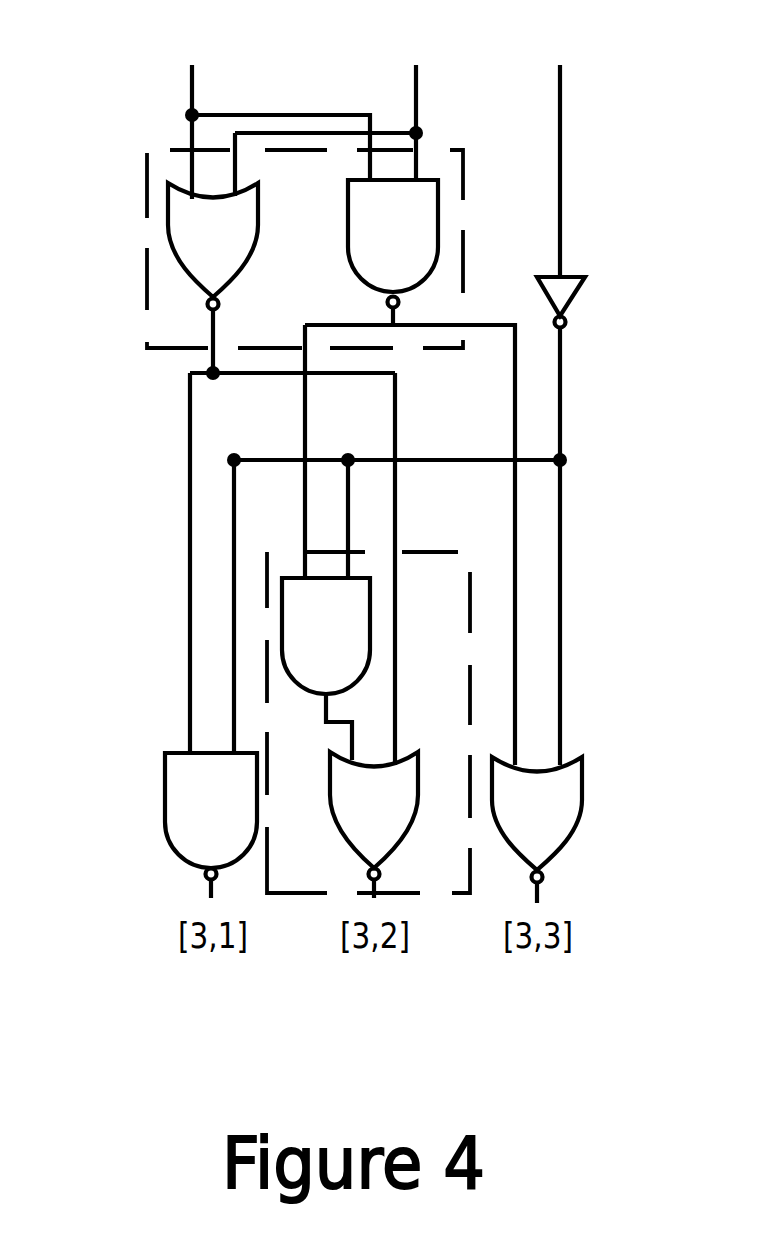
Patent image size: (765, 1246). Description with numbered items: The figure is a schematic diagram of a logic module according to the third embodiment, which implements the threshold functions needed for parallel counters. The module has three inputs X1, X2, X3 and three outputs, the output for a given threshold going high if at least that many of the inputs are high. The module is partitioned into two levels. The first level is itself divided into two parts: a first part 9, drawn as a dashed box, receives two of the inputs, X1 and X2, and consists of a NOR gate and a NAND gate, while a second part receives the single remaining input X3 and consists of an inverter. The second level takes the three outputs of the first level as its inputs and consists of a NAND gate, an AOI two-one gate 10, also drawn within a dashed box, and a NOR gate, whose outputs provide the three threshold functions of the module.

The first part 9 is at (143, 168).
The AOI21 gate 10 is at (453, 893).
The first input signal X1 is at (270, 104).
The second input signal X2 is at (335, 102).
The third input signal X3 is at (561, 387).